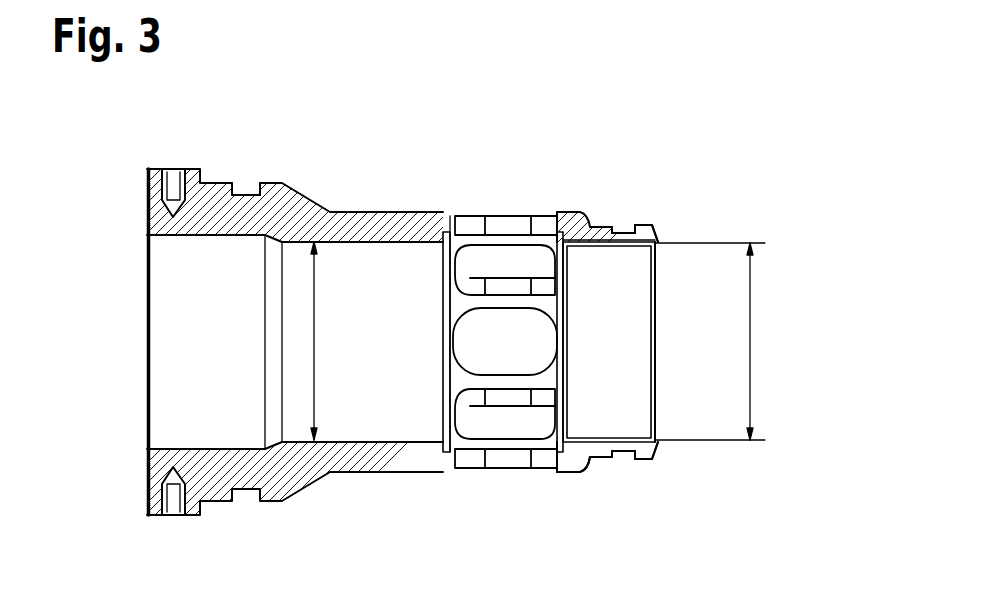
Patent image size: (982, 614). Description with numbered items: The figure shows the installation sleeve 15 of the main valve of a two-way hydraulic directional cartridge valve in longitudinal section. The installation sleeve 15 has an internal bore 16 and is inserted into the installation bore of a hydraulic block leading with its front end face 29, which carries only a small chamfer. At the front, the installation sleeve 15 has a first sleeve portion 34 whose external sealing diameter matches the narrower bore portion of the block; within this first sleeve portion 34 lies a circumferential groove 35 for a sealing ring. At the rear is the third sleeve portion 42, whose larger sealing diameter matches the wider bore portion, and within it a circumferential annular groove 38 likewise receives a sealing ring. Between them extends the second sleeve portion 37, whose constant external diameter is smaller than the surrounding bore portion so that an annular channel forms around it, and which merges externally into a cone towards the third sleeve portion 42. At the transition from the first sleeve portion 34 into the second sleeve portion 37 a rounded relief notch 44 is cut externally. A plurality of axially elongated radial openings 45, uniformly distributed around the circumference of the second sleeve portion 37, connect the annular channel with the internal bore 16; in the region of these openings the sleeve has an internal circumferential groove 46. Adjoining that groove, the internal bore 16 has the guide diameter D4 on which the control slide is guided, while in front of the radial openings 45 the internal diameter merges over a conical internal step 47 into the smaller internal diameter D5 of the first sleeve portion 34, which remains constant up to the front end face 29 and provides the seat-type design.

The installation sleeve 15 is at (368, 192).
The third sleeve portion 42 is at (205, 182).
The circumferential annular groove 38 is at (252, 194).
The second sleeve portion 37 is at (437, 211).
The circumferential groove 46 is at (509, 323).
The conical internal step 47 is at (546, 237).
The radial openings 45 is at (508, 425).
The circumferential groove 35 is at (621, 232).
The first sleeve portion 34 is at (636, 225).
The front end face 29 is at (657, 236).
The internal bore 16 is at (628, 292).
The relief notch 44 is at (585, 459).
The guide diameter D4 is at (314, 342).
The internal diameter D5 is at (750, 341).